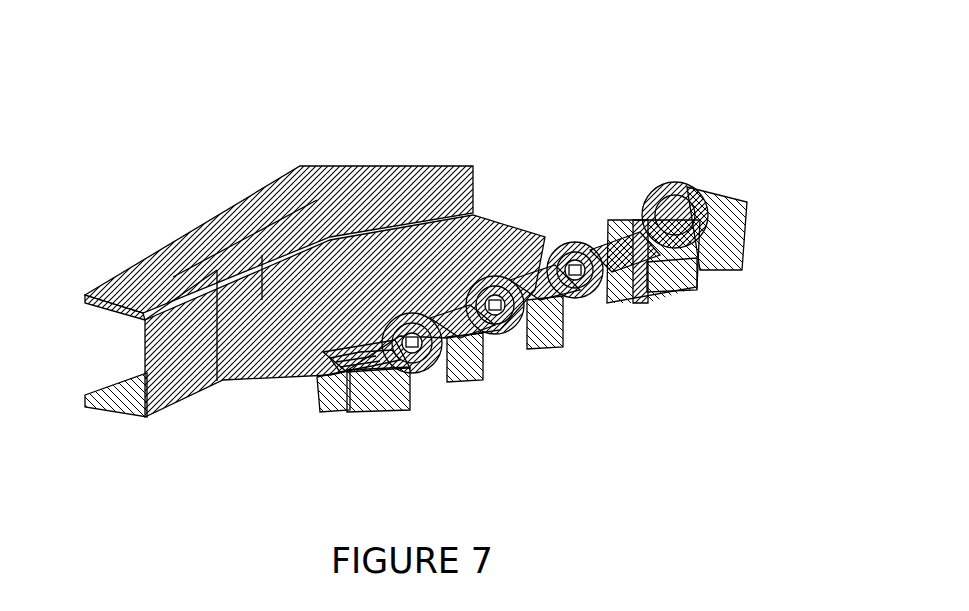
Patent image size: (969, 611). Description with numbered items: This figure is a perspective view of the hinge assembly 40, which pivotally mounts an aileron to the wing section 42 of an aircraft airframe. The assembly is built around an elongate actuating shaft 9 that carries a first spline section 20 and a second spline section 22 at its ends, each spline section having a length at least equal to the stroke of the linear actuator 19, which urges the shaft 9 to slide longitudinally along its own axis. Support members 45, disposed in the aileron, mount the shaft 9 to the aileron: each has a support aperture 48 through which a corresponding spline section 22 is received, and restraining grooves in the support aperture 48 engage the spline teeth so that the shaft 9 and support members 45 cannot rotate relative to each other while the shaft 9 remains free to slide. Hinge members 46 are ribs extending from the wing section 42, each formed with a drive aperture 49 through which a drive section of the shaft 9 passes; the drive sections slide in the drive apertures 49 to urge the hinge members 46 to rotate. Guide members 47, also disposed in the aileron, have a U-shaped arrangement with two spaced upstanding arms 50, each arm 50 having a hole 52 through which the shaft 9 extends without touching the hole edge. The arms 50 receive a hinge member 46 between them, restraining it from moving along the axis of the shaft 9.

The hinge assembly 40 is at (661, 122).
The wing section 42 is at (248, 197).
The hinge member 46 is at (540, 245).
The linear actuator 19 is at (688, 205).
The first spline section 20 is at (700, 228).
The support member 45 is at (384, 405).
The actuating shaft 9 is at (607, 316).
The guide member 47 is at (648, 305).
The upstanding arm 50 is at (540, 335).
The hole 52 is at (508, 343).
The drive aperture 49 is at (440, 355).
The second spline section 22 is at (353, 378).
The support aperture 48 is at (313, 368).